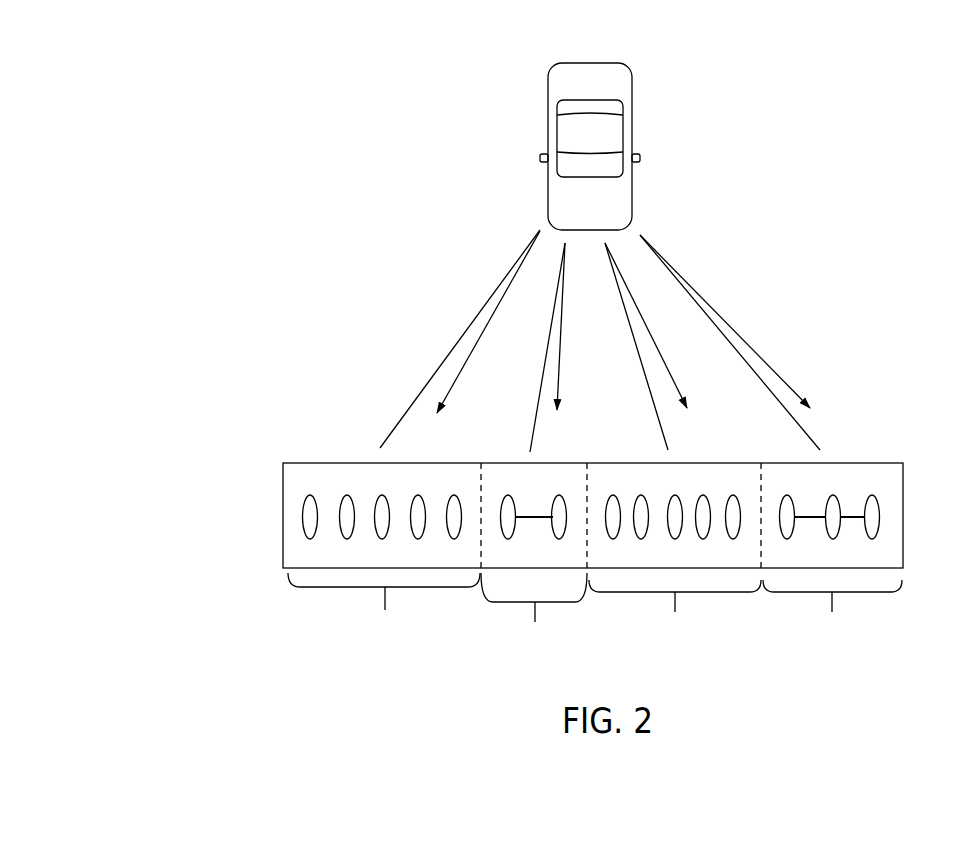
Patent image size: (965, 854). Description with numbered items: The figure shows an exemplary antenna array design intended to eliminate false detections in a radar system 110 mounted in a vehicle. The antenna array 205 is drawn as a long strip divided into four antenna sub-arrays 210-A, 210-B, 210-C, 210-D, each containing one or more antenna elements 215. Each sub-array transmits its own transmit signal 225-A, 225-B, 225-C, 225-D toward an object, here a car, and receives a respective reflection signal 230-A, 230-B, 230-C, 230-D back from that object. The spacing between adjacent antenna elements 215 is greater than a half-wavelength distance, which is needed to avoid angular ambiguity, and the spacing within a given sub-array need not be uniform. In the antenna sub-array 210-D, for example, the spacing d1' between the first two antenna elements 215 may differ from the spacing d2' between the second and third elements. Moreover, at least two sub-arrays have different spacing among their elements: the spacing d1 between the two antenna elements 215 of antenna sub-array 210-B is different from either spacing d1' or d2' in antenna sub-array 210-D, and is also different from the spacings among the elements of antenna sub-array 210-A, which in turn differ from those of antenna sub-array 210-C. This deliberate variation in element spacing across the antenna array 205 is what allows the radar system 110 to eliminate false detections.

The radar system 110 is at (172, 448).
The antenna array 205 is at (290, 536).
The antenna sub-array 210-A is at (384, 571).
The antenna sub-array 210-B is at (534, 563).
The antenna sub-array 210-C is at (674, 556).
The antenna sub-array 210-D is at (831, 556).
The antenna elements 215 is at (833, 487).
The transmit signal 225-A is at (490, 298).
The transmit signal 225-B is at (543, 373).
The transmit signal 225-C is at (653, 402).
The transmit signal 225-D is at (776, 398).
The reflection signal 230-A is at (504, 294).
The reflection signal 230-B is at (560, 343).
The reflection signal 230-C is at (641, 314).
The reflection signal 230-D is at (770, 367).
The spacing d1 is at (534, 539).
The spacing d1' is at (810, 539).
The spacing d2' is at (854, 539).